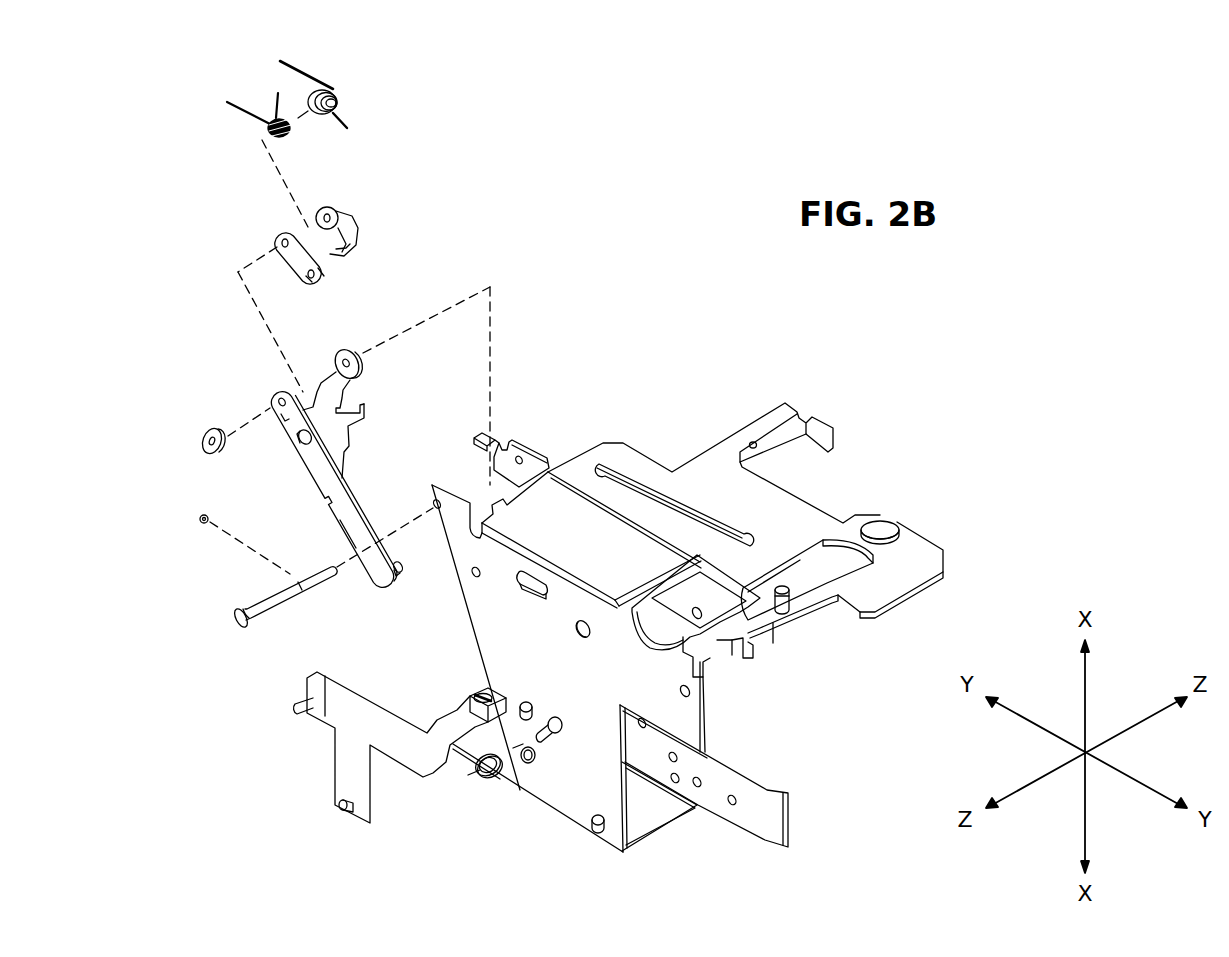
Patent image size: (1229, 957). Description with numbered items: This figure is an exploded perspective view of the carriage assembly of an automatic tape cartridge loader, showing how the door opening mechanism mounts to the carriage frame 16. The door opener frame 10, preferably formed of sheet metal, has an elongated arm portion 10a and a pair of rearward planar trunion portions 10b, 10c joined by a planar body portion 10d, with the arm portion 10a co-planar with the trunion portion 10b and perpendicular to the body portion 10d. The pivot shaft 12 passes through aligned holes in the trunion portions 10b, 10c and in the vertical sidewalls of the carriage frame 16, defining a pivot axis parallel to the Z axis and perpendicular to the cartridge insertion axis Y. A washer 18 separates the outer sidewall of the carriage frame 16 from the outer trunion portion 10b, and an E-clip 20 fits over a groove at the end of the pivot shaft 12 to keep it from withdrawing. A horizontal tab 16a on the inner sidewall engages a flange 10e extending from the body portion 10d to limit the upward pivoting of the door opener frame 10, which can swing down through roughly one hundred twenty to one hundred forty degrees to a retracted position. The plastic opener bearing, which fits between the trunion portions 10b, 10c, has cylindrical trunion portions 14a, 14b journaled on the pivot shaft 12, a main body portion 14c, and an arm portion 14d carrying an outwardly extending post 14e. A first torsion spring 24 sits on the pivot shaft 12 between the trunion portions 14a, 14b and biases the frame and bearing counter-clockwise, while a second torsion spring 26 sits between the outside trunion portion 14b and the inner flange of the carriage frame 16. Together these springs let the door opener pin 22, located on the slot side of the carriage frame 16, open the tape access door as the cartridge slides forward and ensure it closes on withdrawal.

The door opener frame 10 is at (331, 416).
The arm portion 10a is at (357, 519).
The trunion portion 10b is at (278, 399).
The trunion portion 10c is at (352, 357).
The body portion 10d is at (344, 441).
The flange 10e is at (362, 408).
The pivot shaft 12 is at (276, 610).
The trunion portion 14a is at (282, 239).
The trunion portion 14b is at (343, 210).
The main body portion 14c is at (345, 253).
The arm portion 14d is at (327, 281).
The post 14e is at (309, 280).
The carriage frame 16 is at (490, 623).
The horizontal tab 16a is at (478, 435).
The washer 18 is at (204, 433).
The E-clip 20 is at (200, 517).
The door opener pin 22 is at (402, 573).
The first torsion spring 24 is at (250, 118).
The second torsion spring 26 is at (317, 78).